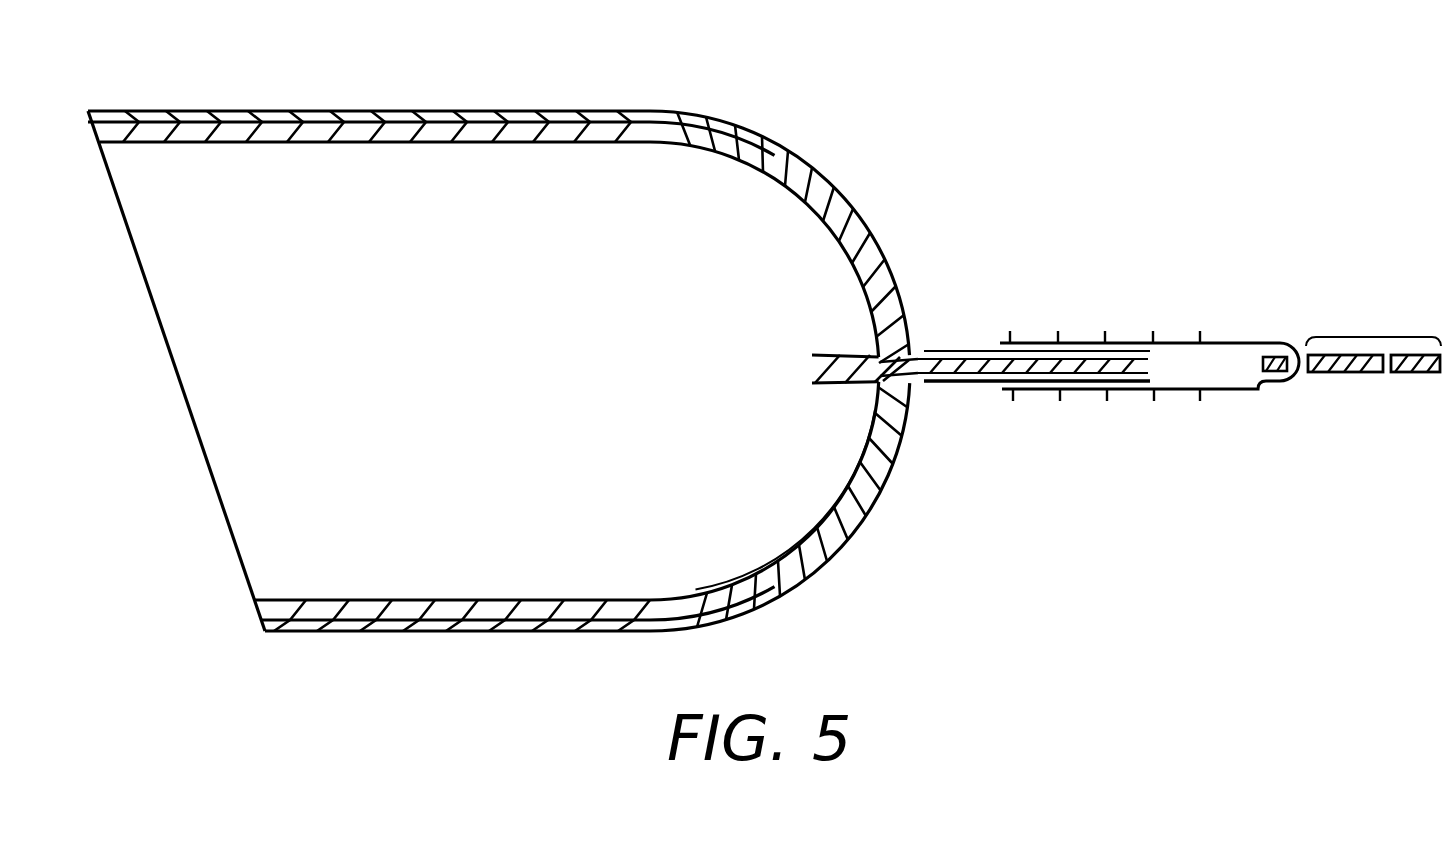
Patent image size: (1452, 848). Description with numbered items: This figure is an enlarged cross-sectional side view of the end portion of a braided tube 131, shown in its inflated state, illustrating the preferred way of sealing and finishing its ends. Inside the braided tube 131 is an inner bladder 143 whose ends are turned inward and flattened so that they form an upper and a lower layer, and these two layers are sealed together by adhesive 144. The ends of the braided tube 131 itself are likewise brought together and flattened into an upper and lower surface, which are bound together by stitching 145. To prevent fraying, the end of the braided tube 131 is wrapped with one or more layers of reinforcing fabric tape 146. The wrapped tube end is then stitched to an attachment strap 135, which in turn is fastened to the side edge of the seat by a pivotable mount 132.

The braided tube 131 is at (558, 108).
The pivotable mount 132 is at (1383, 337).
The attachment strap 135 is at (1262, 392).
The inner bladder 143 is at (826, 353).
The adhesive 144 is at (907, 418).
The stitching 145 is at (1198, 342).
The reinforcing fabric tape 146 is at (946, 350).